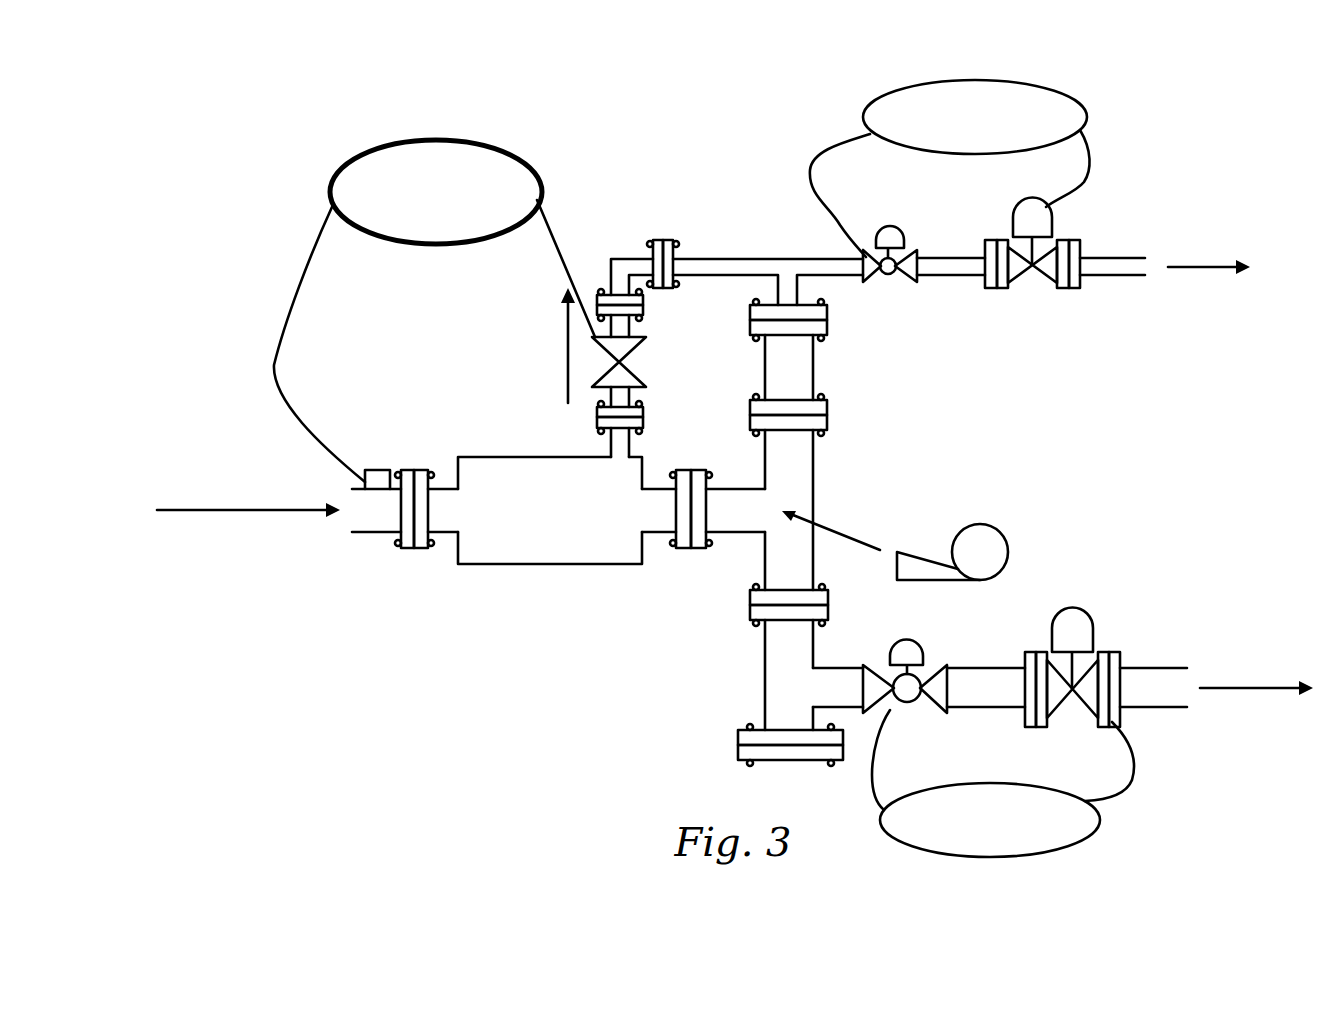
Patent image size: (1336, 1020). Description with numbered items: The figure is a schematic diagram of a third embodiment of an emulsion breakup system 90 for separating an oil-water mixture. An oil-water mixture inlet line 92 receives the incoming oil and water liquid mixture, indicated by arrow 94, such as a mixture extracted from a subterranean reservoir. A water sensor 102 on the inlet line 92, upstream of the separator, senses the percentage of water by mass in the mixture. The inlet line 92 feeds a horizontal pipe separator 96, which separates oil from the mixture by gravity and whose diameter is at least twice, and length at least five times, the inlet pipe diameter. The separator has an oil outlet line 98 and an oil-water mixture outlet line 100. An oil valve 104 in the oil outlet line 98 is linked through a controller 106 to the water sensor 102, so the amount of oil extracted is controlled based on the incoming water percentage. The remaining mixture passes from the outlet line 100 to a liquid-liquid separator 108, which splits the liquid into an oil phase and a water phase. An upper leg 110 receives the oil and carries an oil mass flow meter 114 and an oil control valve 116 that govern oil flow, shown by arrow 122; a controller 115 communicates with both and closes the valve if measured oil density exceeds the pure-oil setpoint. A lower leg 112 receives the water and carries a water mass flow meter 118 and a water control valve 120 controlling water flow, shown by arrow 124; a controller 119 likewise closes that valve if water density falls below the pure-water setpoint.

The emulsion breakup system 90 is at (258, 226).
The oil-water mixture inlet line 92 is at (441, 498).
The arrow 94 is at (258, 506).
The horizontal pipe separator 96 is at (560, 546).
The oil outlet line 98 is at (716, 257).
The oil-water mixture outlet line 100 is at (733, 518).
The water sensor 102 is at (377, 468).
The oil valve 104 is at (636, 357).
The controller 106 is at (452, 142).
The liquid-liquid separator 108 is at (991, 549).
The upper leg 110 is at (798, 367).
The lower leg 112 is at (782, 688).
The oil mass flow meter 114 is at (882, 234).
The controller 115 is at (1022, 76).
The oil control valve 116 is at (1082, 246).
The water mass flow meter 118 is at (927, 702).
The controller 119 is at (1063, 858).
The water control valve 120 is at (1050, 708).
The arrow 122 is at (1200, 252).
The arrow 124 is at (1233, 686).